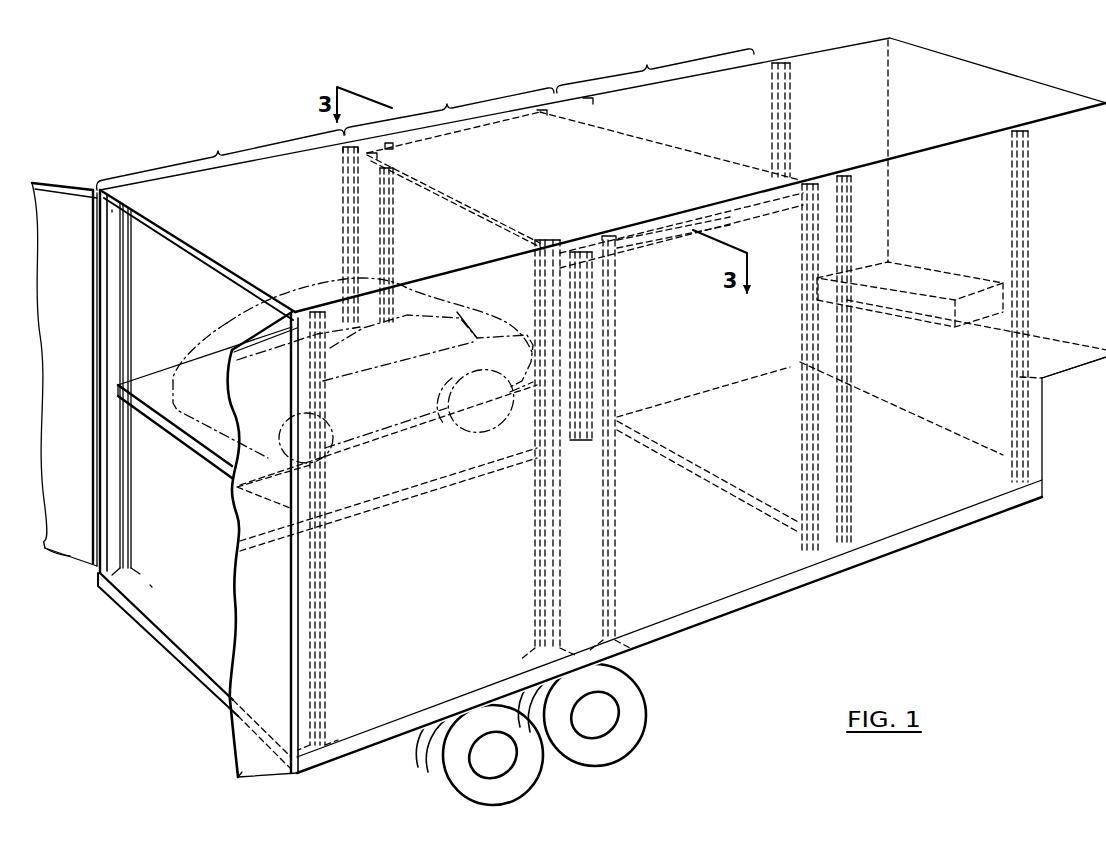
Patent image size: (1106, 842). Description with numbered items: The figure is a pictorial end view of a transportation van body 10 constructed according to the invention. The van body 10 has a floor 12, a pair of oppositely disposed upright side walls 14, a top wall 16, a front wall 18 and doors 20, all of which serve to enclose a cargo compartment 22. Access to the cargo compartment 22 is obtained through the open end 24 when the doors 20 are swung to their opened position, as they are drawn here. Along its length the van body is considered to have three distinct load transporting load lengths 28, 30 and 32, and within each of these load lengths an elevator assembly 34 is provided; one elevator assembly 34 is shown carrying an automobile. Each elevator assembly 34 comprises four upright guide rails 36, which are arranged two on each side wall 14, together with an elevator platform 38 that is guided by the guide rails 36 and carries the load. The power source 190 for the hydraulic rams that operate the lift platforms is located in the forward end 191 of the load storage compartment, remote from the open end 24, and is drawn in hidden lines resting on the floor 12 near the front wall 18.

The transportation van body 10 is at (140, 146).
The floor 12 is at (182, 624).
The upright side walls 14 is at (110, 488).
The top wall 16 is at (203, 227).
The front wall 18 is at (1030, 104).
The doors 20 is at (78, 553).
The cargo compartment 22 is at (166, 316).
The open end 24 is at (146, 592).
The load transporting load length 28 is at (220, 156).
The load transporting load length 30 is at (449, 107).
The load transporting load length 32 is at (655, 68).
The elevator assembly 34 is at (404, 464).
The upright guide rails 36 is at (345, 205).
The elevator platform 38 is at (617, 153).
The power source 190 is at (962, 275).
The forward end 191 is at (1058, 357).